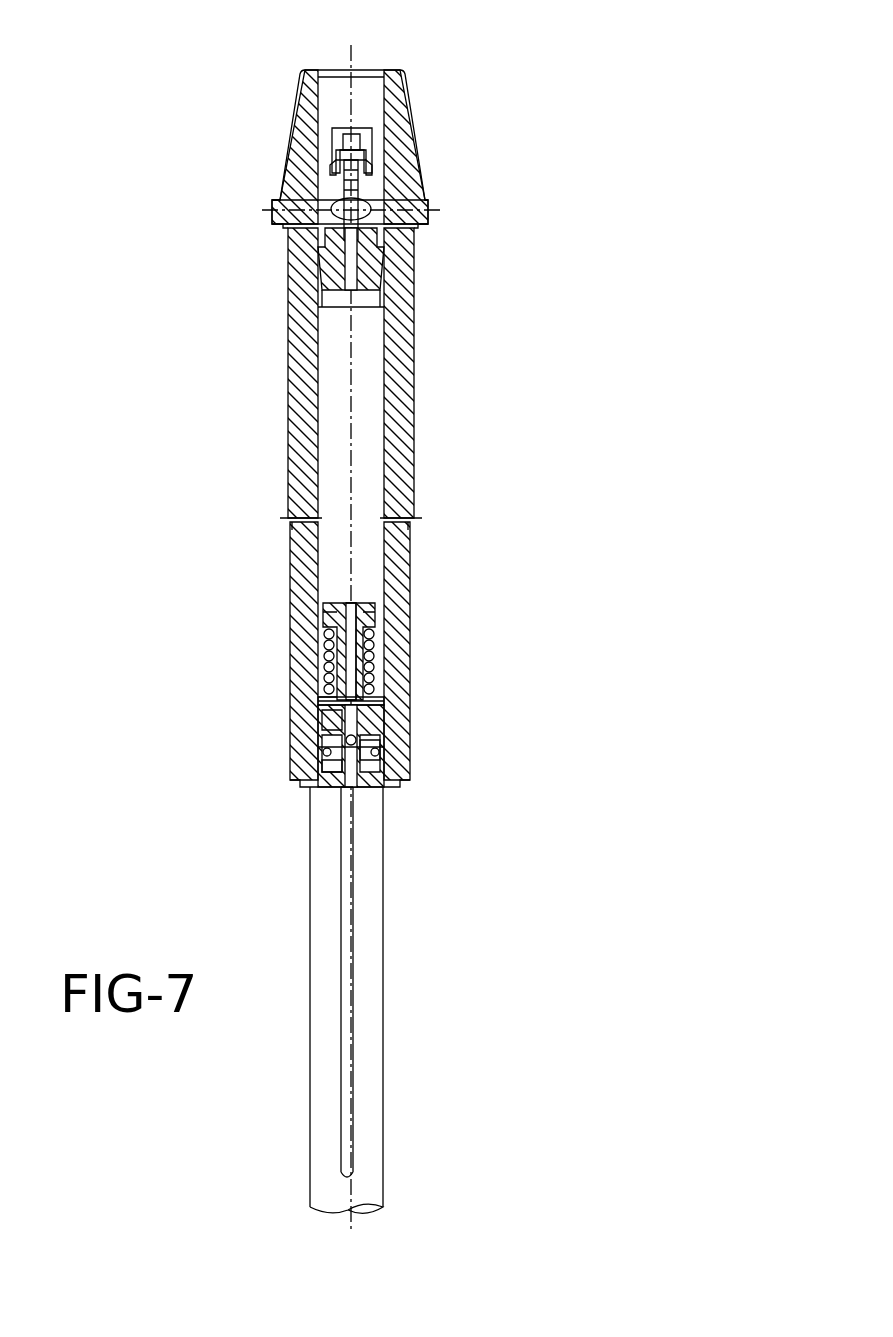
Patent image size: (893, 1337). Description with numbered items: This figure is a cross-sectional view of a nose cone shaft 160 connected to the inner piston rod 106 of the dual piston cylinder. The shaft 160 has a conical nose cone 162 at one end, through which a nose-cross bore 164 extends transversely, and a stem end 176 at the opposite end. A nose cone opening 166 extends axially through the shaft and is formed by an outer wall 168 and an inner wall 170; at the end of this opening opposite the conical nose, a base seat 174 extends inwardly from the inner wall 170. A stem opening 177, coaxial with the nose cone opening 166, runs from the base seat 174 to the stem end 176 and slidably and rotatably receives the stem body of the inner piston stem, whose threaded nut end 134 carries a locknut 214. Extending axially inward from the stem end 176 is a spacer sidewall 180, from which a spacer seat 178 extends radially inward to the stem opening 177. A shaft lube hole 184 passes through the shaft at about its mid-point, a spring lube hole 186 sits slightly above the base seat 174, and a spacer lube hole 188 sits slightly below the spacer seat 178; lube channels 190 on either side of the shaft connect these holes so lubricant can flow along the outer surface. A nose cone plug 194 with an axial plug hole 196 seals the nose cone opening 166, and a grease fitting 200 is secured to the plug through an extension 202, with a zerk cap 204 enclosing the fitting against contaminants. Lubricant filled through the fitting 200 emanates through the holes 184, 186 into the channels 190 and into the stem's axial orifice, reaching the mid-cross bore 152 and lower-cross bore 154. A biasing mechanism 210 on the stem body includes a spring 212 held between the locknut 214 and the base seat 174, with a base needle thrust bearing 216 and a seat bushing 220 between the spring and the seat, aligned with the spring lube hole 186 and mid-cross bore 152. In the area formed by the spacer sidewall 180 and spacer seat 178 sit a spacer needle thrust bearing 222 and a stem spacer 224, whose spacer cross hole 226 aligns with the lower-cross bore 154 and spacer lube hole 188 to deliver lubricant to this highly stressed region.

The inner piston rod 106 is at (390, 993).
The nut end 134 is at (345, 603).
The mid-cross bore 152 is at (378, 722).
The lower-cross bore 154 is at (352, 800).
The nose cone shaft 160 is at (200, 430).
The conical nose cone 162 is at (290, 160).
The nose-cross bore 164 is at (280, 214).
The nose cone opening 166 is at (365, 104).
The outer wall 168 is at (410, 405).
The inner wall 170 is at (388, 378).
The base seat 174 is at (390, 701).
The stem end 176 is at (392, 784).
The stem opening 177 is at (340, 790).
The spacer seat 178 is at (386, 742).
The spacer sidewall 180 is at (322, 730).
The shaft lube hole 184 is at (390, 516).
The spring lube hole 186 is at (385, 697).
The spacer lube hole 188 is at (318, 760).
The lube channels 190 is at (292, 548).
The nose cone plug 194 is at (378, 258).
The plug hole 196 is at (340, 293).
The grease fitting 200 is at (368, 158).
The extension 202 is at (365, 196).
The zerk cap 204 is at (335, 134).
The biasing mechanism 210 is at (372, 610).
The spring 212 is at (372, 648).
The locknut 214 is at (330, 612).
The base needle thrust bearing 216 is at (318, 697).
The seat bushing 220 is at (325, 685).
The spacer needle thrust bearing 222 is at (320, 762).
The stem spacer 224 is at (322, 782).
The spacer cross hole 226 is at (362, 786).